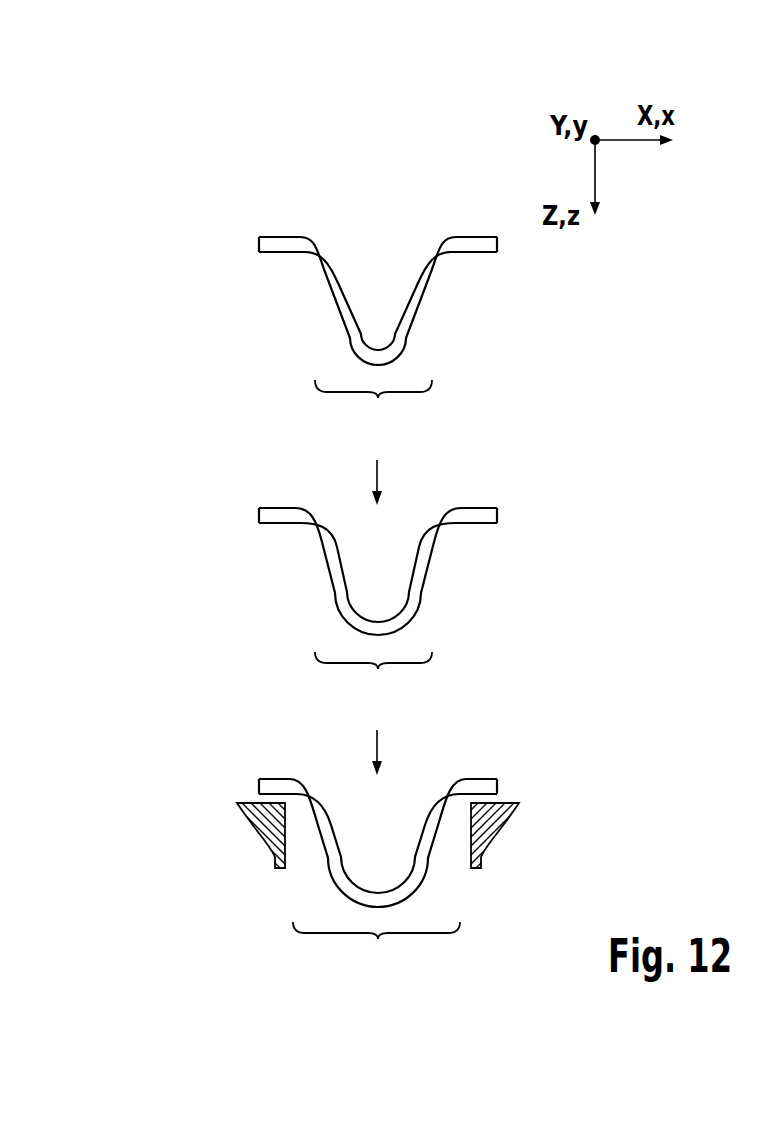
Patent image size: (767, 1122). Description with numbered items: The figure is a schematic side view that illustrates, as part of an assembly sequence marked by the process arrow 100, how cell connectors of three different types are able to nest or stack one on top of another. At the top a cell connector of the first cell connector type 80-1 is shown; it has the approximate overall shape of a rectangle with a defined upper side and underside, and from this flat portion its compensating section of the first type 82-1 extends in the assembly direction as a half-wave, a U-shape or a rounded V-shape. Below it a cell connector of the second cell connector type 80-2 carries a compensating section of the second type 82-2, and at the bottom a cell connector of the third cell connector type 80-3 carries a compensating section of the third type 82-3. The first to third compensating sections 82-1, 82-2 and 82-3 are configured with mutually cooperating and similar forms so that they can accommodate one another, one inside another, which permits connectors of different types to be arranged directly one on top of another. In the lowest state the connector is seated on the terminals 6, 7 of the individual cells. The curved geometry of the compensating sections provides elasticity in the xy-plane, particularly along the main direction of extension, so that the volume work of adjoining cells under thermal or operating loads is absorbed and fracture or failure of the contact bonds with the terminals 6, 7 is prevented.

The forming method / process step 100 is at (373, 172).
The first cell connector type 80-1 is at (290, 256).
The second cell connector type 80-2 is at (290, 527).
The third cell connector type 80-3 is at (290, 797).
The compensating section of the first type 82-1 is at (373, 412).
The compensating section of the second type 82-2 is at (373, 684).
The compensating section of the third type 82-3 is at (376, 954).
The terminal 6 is at (380, 835).
The terminal 7 is at (268, 833).